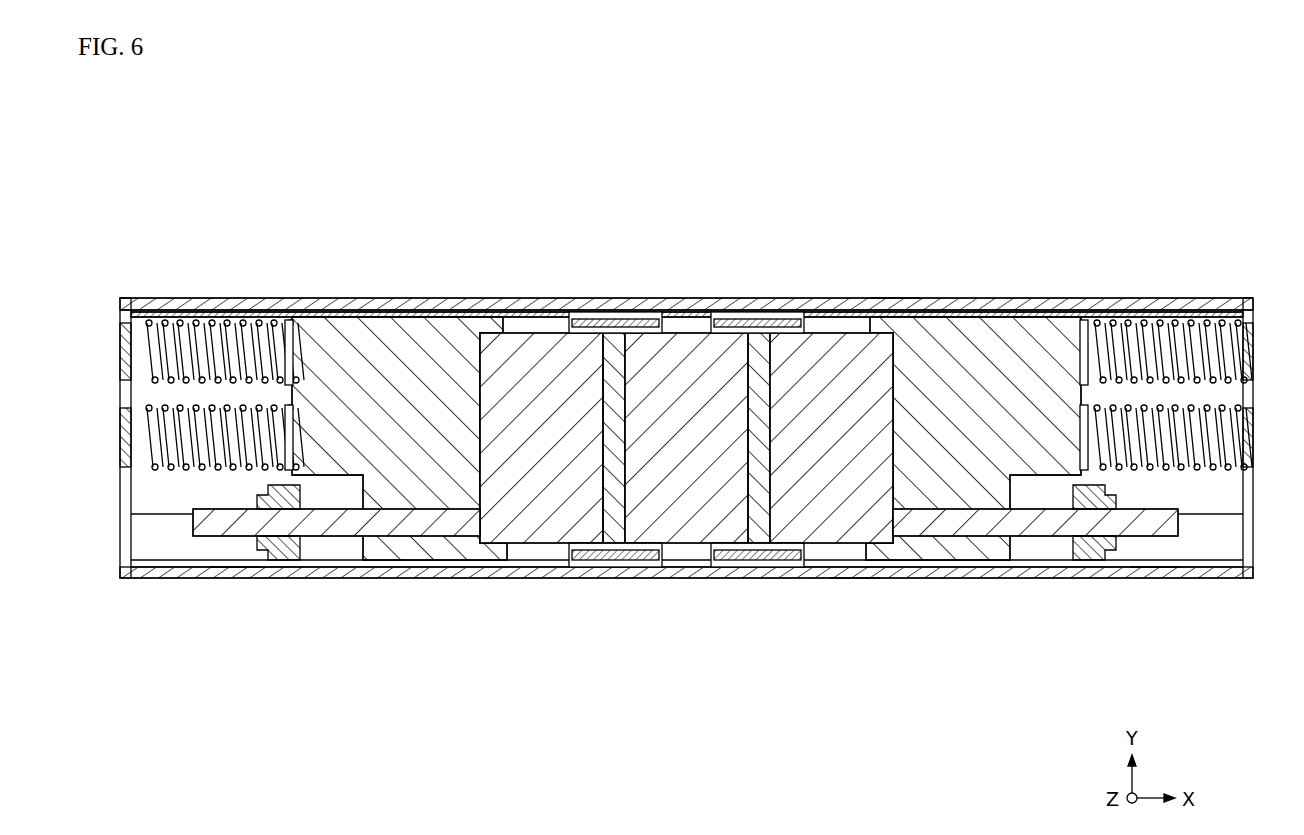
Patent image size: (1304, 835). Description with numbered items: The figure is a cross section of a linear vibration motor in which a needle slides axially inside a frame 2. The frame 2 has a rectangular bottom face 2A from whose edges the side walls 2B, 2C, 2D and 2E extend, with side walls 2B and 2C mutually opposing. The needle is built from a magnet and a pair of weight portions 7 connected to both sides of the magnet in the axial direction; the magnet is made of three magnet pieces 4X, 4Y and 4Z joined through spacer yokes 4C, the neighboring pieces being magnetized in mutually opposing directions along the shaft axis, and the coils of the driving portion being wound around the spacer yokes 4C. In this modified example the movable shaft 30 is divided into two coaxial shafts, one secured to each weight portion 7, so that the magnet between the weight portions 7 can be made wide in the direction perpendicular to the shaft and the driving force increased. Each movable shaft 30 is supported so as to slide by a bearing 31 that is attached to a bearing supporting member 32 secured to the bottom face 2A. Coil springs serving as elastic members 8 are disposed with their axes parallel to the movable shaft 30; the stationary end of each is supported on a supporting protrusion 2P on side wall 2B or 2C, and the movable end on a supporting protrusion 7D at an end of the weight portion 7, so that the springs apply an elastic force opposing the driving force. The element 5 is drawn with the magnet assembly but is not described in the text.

The frame 2 is at (520, 578).
The bottom face 2A is at (218, 492).
The side wall 2B is at (121, 310).
The side wall 2C is at (1253, 312).
The side wall 2D is at (855, 578).
The side wall 2E is at (893, 305).
The supporting protrusion 2P is at (153, 322).
The magnet piece 4X is at (532, 330).
The magnet piece 4Y is at (690, 333).
The magnet piece 4Z is at (832, 333).
The spacer yoke 4C is at (638, 312).
The electrode layer 5 is at (745, 578).
The weight portion 7 is at (370, 338).
The supporting protrusion 7D is at (283, 400).
The elastic member 8 is at (192, 321).
The movable shaft 30 is at (343, 540).
The bearing 31 is at (300, 560).
The bearing supporting member 32 is at (233, 578).